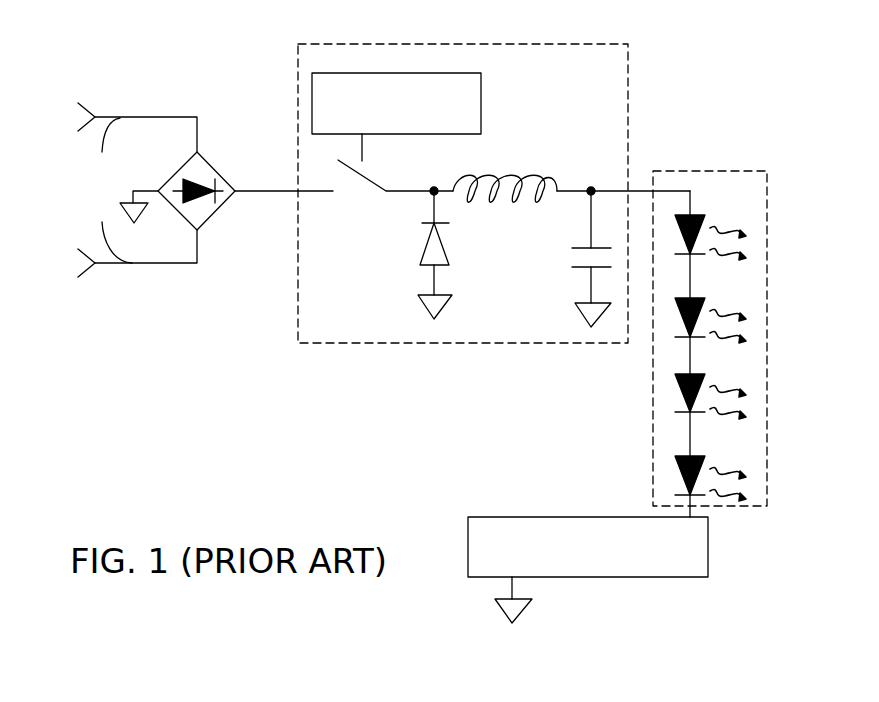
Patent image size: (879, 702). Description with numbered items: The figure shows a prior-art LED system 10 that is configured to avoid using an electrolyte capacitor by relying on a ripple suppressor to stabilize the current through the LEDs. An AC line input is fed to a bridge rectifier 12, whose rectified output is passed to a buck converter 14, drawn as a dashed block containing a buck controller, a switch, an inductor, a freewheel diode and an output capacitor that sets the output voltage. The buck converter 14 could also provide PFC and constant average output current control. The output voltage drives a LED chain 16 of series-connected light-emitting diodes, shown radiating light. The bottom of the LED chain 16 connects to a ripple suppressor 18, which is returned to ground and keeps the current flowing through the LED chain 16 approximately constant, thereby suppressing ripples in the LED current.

The LED system 10 is at (697, 100).
The bridge rectifier 12 is at (205, 160).
The buck converter 14 is at (611, 79).
The LED chain 16 is at (652, 452).
The ripple suppressor 18 is at (664, 558).